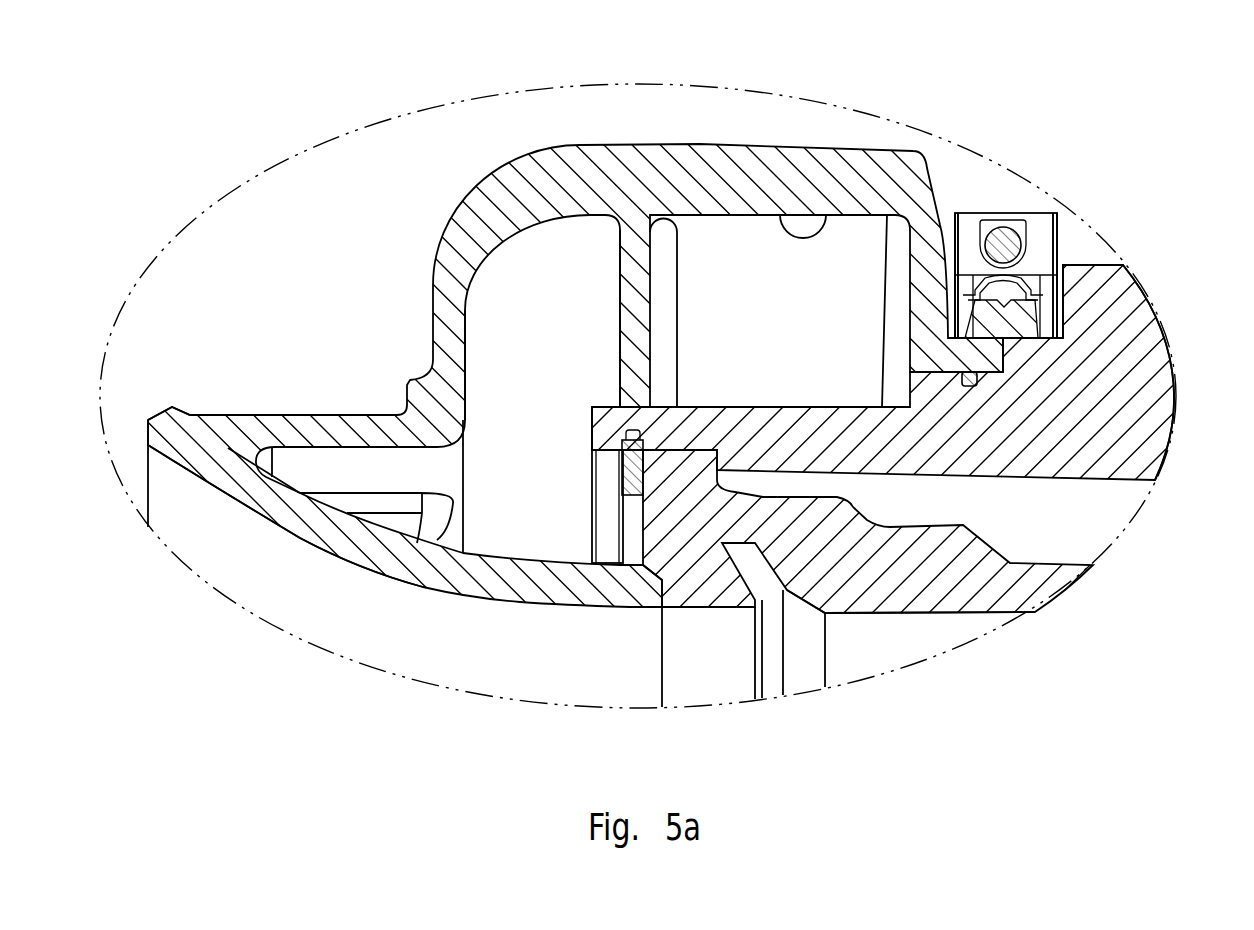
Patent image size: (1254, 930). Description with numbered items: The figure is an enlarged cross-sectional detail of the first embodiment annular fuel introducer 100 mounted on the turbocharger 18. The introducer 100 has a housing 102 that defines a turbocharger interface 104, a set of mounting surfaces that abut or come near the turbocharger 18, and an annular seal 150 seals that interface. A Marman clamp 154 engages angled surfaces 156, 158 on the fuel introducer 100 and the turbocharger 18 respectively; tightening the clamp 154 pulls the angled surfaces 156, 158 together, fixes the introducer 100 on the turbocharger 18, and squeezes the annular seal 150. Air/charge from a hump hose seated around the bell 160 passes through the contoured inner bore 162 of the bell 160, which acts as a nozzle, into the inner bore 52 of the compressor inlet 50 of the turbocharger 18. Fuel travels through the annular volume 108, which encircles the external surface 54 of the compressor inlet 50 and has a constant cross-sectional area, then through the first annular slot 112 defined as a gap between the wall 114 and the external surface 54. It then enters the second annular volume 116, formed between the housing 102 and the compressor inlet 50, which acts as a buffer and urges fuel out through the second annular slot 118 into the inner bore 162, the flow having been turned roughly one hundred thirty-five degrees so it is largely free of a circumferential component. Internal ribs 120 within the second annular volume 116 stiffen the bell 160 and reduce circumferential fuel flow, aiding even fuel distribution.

The annular fuel introducer 100 is at (283, 217).
The housing 102 is at (650, 175).
The turbocharger interface 104 is at (1007, 340).
The annular volume 108 is at (828, 218).
The first annular slot 112 is at (593, 410).
The wall 114 is at (635, 283).
The second annular volume 116 is at (470, 290).
The second annular slot 118 is at (643, 553).
The internal ribs 120 is at (373, 513).
The annular seal 150 is at (978, 382).
The Marman clamp 154 is at (1012, 210).
The angled surface 156 is at (970, 318).
The angled surface 158 is at (985, 318).
The bell 160 is at (205, 410).
The inner bore 162 is at (217, 500).
The turbocharger 18 is at (1133, 322).
The compressor inlet 50 is at (900, 627).
The inner bore 52 is at (970, 615).
The external surface 54 is at (795, 407).